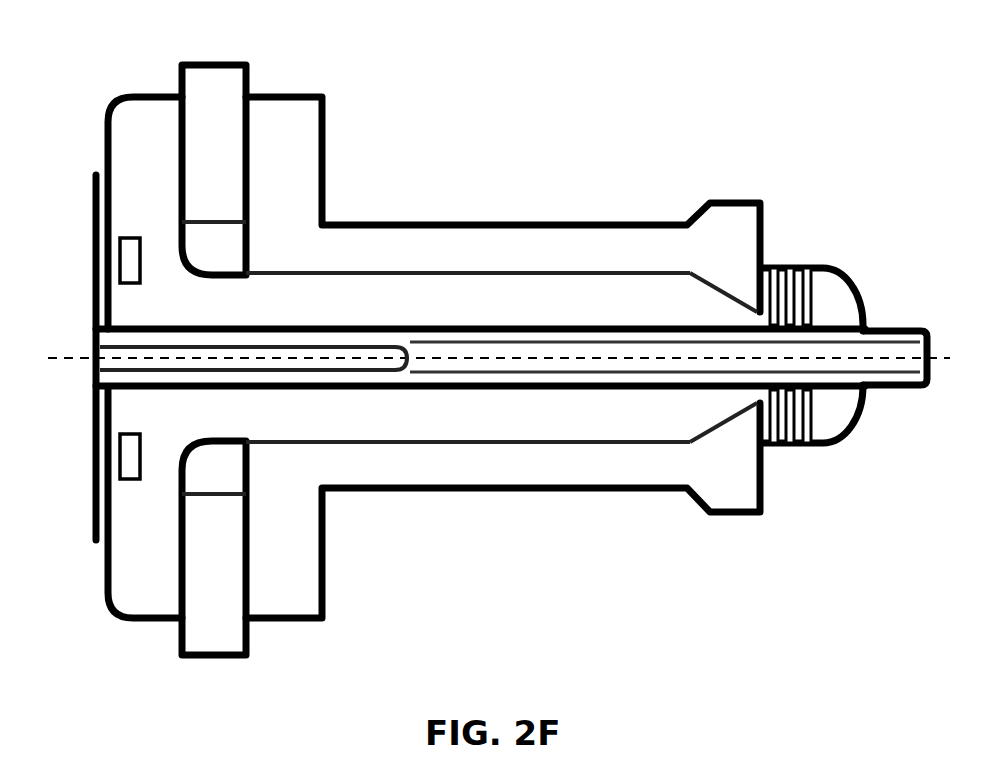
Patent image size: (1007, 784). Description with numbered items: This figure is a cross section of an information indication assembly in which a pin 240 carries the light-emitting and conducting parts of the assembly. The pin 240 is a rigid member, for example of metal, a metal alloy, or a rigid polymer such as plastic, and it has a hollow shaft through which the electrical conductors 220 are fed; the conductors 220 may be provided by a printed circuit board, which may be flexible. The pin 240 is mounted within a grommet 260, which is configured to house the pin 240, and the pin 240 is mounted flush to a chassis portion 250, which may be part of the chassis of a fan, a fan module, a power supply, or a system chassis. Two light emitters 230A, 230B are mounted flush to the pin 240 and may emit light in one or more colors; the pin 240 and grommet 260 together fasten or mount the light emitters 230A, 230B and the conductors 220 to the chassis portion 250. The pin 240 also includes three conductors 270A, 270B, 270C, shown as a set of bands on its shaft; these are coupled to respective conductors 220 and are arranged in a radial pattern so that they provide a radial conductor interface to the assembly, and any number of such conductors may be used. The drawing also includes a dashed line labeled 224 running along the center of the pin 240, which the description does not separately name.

The electrical conductors 220 is at (883, 332).
The longitudinal axis 224 is at (82, 362).
The light emitter 230A is at (113, 262).
The light emitter 230B is at (112, 455).
The pin 240 is at (137, 98).
The chassis portion 250 is at (215, 63).
The grommet 260 is at (514, 224).
The conductor 270A is at (774, 268).
The conductor 270B is at (791, 268).
The conductor 270C is at (807, 268).